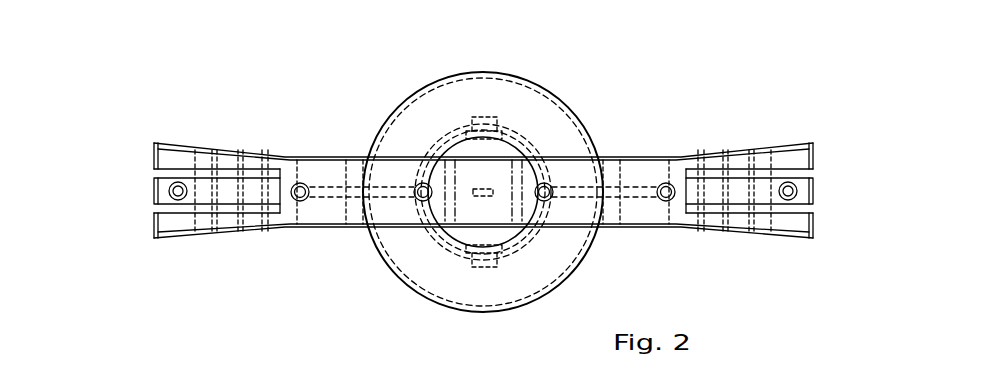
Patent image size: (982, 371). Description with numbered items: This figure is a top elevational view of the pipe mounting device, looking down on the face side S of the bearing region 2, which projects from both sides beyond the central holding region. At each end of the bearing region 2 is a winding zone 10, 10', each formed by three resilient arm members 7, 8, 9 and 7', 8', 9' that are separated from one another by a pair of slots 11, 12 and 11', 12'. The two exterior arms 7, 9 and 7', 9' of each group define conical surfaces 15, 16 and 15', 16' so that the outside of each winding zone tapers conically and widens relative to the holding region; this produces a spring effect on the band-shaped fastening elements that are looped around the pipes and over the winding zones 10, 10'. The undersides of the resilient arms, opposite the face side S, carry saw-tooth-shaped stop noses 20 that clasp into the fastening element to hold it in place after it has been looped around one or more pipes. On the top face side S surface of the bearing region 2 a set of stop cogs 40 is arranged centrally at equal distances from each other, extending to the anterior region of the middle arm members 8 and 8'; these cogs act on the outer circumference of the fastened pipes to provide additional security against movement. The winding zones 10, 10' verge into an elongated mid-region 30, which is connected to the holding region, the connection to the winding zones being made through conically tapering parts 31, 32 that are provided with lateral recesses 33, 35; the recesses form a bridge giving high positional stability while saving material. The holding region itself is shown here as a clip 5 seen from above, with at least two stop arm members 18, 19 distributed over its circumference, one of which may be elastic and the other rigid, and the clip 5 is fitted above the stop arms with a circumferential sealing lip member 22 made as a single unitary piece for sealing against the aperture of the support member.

The bearing region 2 is at (637, 123).
The clip 5 is at (460, 148).
The resilient arm member 7 is at (217, 133).
The resilient arm member 7' is at (753, 136).
The resilient arm member 8 is at (201, 202).
The resilient arm member 8' is at (769, 179).
The resilient arm member 9 is at (217, 248).
The resilient arm member 9' is at (755, 249).
The winding zone 10 is at (113, 169).
The winding zone 10' is at (861, 214).
The slot 11 is at (271, 144).
The slot 11' is at (705, 141).
The slot 12 is at (272, 245).
The slot 12' is at (712, 247).
The conical surface 15 is at (200, 163).
The conical surface 15' is at (758, 165).
The conical surface 16 is at (243, 220).
The conical surface 16' is at (746, 222).
The stop arm member 18 is at (493, 121).
The stop arm member 19 is at (472, 262).
The stop noses 20 is at (223, 157).
The circumferential sealing lip member 22 is at (480, 312).
The mid-region 30 is at (487, 203).
The conically tapering part 31 is at (318, 216).
The conically tapering part 32 is at (637, 224).
The lateral recess 33 is at (382, 170).
The lateral recess 35 is at (637, 168).
The stop cogs 40 is at (302, 183).
The face side S is at (144, 184).